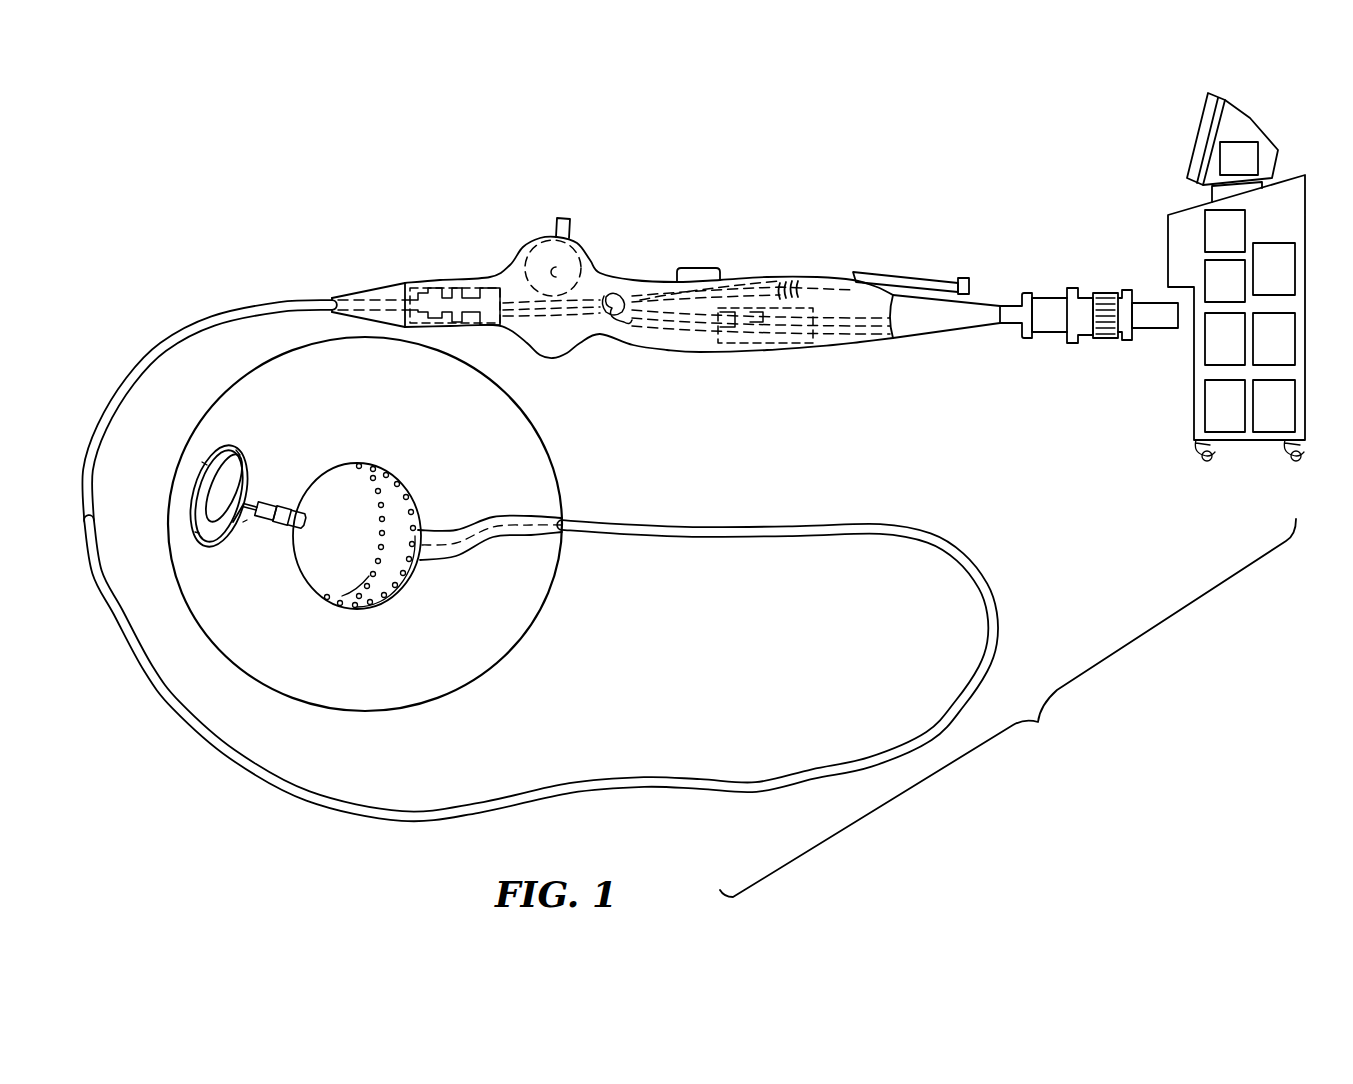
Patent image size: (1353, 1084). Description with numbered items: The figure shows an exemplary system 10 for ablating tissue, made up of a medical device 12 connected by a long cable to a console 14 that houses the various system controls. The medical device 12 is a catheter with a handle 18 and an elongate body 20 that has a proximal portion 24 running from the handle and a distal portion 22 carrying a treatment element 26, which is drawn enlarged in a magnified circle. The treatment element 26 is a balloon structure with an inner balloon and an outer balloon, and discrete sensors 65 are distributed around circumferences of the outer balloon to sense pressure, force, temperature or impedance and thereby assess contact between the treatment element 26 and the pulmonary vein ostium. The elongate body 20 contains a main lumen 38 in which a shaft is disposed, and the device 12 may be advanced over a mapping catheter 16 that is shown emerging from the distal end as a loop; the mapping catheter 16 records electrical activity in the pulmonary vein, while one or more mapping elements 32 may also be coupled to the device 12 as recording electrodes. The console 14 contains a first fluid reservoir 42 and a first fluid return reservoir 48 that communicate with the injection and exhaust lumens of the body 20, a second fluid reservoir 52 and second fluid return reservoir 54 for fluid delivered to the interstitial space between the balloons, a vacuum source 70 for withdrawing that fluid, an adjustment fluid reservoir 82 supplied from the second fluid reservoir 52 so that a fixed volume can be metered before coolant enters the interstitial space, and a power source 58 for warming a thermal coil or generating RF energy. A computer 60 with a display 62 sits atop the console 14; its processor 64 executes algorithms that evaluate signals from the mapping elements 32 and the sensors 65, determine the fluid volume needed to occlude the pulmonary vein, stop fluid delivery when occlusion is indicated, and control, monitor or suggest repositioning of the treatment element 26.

The system 10 is at (1008, 708).
The medical device 12 is at (368, 148).
The console 14 is at (1302, 214).
The mapping catheter 16 is at (238, 443).
The handle 18 is at (857, 350).
The elongate body 20 is at (223, 750).
The distal portion 22 is at (441, 555).
The proximal portion 24 is at (190, 320).
The treatment element 26 is at (342, 490).
The mapping element 32 is at (228, 534).
The main lumen 38 is at (505, 540).
The first fluid reservoir 42 is at (1238, 421).
The first fluid return reservoir 48 is at (1287, 421).
The second fluid reservoir 52 is at (1238, 354).
The second fluid return reservoir 54 is at (1287, 354).
The power source 58 is at (1238, 247).
The computer 60 is at (1201, 136).
The display 62 is at (1200, 125).
The processor 64 is at (1252, 171).
The sensor 65 is at (406, 478).
The vacuum source 70 is at (1287, 283).
The adjustment fluid reservoir 82 is at (1238, 297).